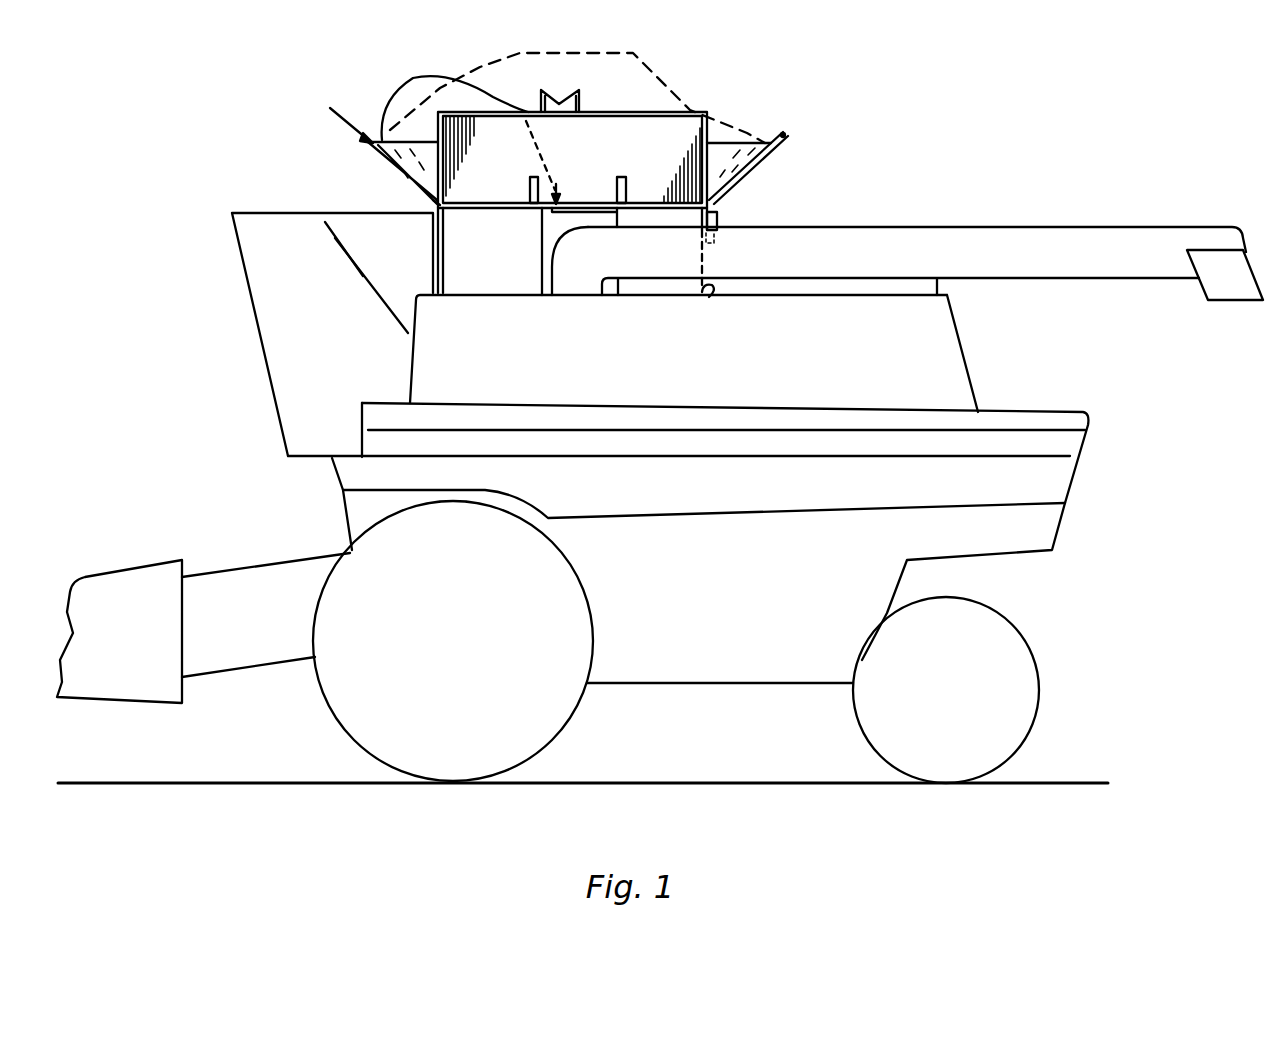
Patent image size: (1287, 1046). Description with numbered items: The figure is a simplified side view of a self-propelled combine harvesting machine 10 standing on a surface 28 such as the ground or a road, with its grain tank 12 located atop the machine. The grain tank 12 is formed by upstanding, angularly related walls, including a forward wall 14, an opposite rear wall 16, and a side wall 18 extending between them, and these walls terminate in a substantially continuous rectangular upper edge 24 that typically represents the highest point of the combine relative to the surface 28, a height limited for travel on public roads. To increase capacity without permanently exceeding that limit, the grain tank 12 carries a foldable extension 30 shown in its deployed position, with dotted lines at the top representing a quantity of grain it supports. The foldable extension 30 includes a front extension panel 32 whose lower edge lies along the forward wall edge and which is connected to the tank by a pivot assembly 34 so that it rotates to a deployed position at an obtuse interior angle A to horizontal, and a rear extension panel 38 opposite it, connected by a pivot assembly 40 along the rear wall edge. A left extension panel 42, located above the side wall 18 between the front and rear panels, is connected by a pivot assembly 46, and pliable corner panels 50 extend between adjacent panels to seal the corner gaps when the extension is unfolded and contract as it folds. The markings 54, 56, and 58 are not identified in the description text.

The harvesting machine 10 is at (238, 704).
The grain tank 12 is at (436, 272).
The forward wall 14 is at (429, 279).
The rear wall 16 is at (704, 294).
The side wall 18 is at (526, 281).
The upper edge 24 is at (572, 160).
The surface 28 is at (1073, 783).
The foldable extension 30 is at (793, 131).
The front extension panel 32 is at (378, 146).
The pivot assembly 34 is at (433, 207).
The rear extension panel 38 is at (770, 152).
The pivot assembly 40 is at (712, 205).
The left extension panel 42 is at (529, 110).
The pivot assembly 46 is at (513, 210).
The corner panel 50 is at (350, 106).
The extended position outline 54 is at (434, 130).
The panel surface 56 is at (412, 177).
The tank wall 58 is at (440, 157).
The angle A is at (455, 72).